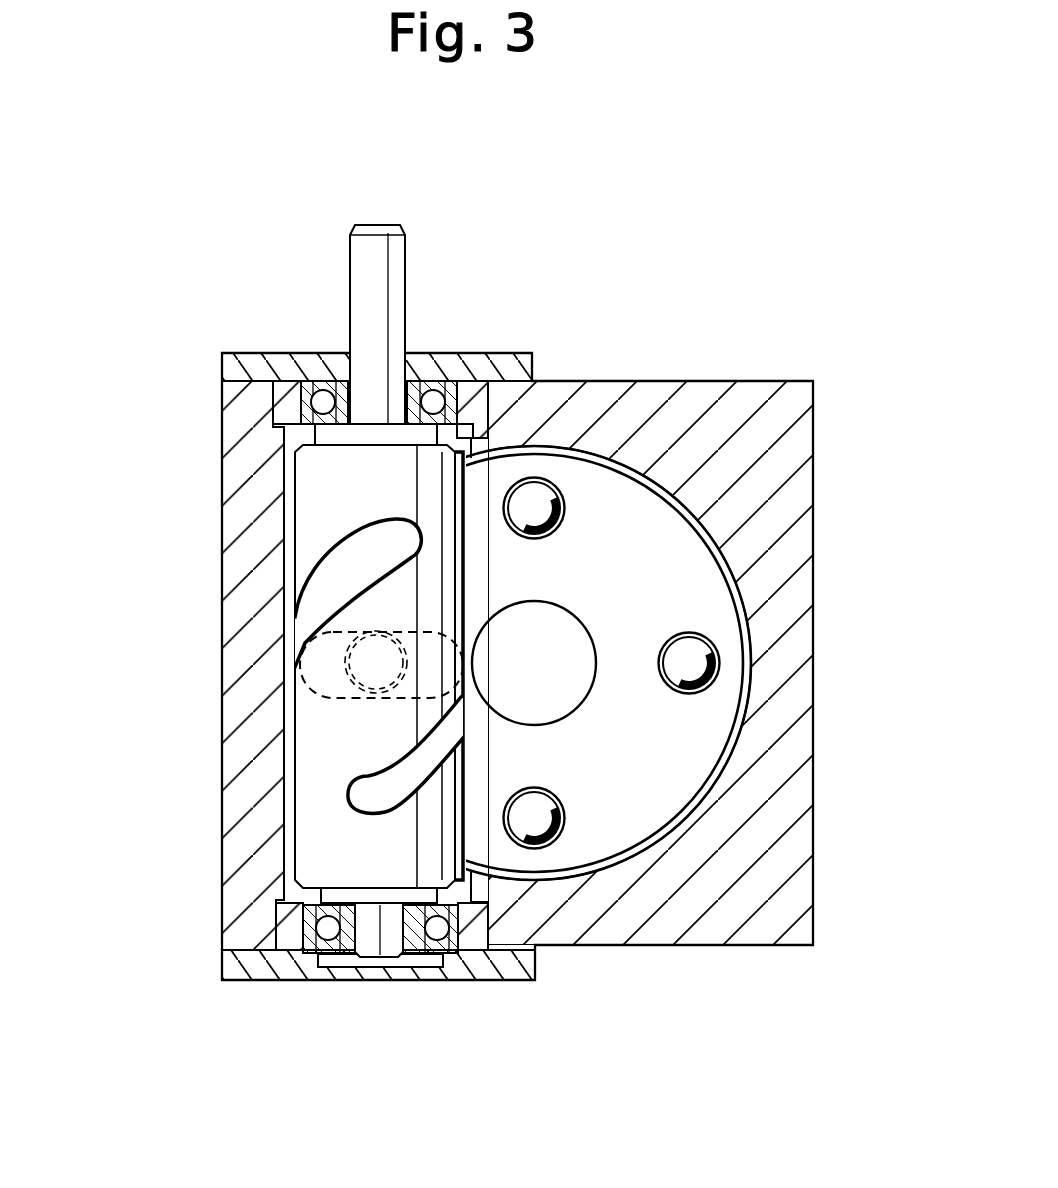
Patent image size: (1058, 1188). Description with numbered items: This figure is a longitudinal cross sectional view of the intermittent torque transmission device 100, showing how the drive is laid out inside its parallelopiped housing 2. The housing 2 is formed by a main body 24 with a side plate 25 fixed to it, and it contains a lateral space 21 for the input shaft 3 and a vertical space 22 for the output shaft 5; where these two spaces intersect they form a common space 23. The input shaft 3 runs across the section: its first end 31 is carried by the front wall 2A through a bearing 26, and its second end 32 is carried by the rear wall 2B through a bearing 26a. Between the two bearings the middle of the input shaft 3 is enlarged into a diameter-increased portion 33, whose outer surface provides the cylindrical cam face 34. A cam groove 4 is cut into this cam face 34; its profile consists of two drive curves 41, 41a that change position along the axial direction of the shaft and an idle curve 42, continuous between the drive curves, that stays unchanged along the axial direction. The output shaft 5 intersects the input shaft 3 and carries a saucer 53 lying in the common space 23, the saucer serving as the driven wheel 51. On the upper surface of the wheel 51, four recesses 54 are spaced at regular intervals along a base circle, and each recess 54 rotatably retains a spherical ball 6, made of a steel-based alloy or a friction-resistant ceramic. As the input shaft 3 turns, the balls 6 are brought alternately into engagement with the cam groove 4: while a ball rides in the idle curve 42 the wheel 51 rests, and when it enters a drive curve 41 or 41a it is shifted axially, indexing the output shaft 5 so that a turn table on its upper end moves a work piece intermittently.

The rotary device 100 is at (760, 332).
The housing 2 is at (812, 363).
The front wall 2A is at (227, 400).
The rear wall 2B is at (243, 968).
The lateral space 21 is at (273, 467).
The vertical space 22 is at (702, 807).
The common space 23 is at (462, 960).
The main body 24 is at (750, 910).
The side plate 25 is at (245, 910).
The bearing 26 is at (470, 355).
The bearing 26a is at (306, 958).
The input shaft 3 is at (362, 650).
The first end 31 is at (397, 268).
The second end 32 is at (376, 932).
The diameter-increased portion 33 is at (290, 528).
The cylindrical cam face 34 is at (325, 752).
The cam groove 4 is at (290, 676).
The drive curve 41 is at (370, 800).
The drive curve 41a is at (357, 557).
The idle curve 42 is at (346, 668).
The output shaft 5 is at (622, 663).
The driven wheel 51 is at (698, 745).
The saucer 53 is at (745, 592).
The recess 54 is at (568, 505).
The spherical ball 6 is at (524, 508).